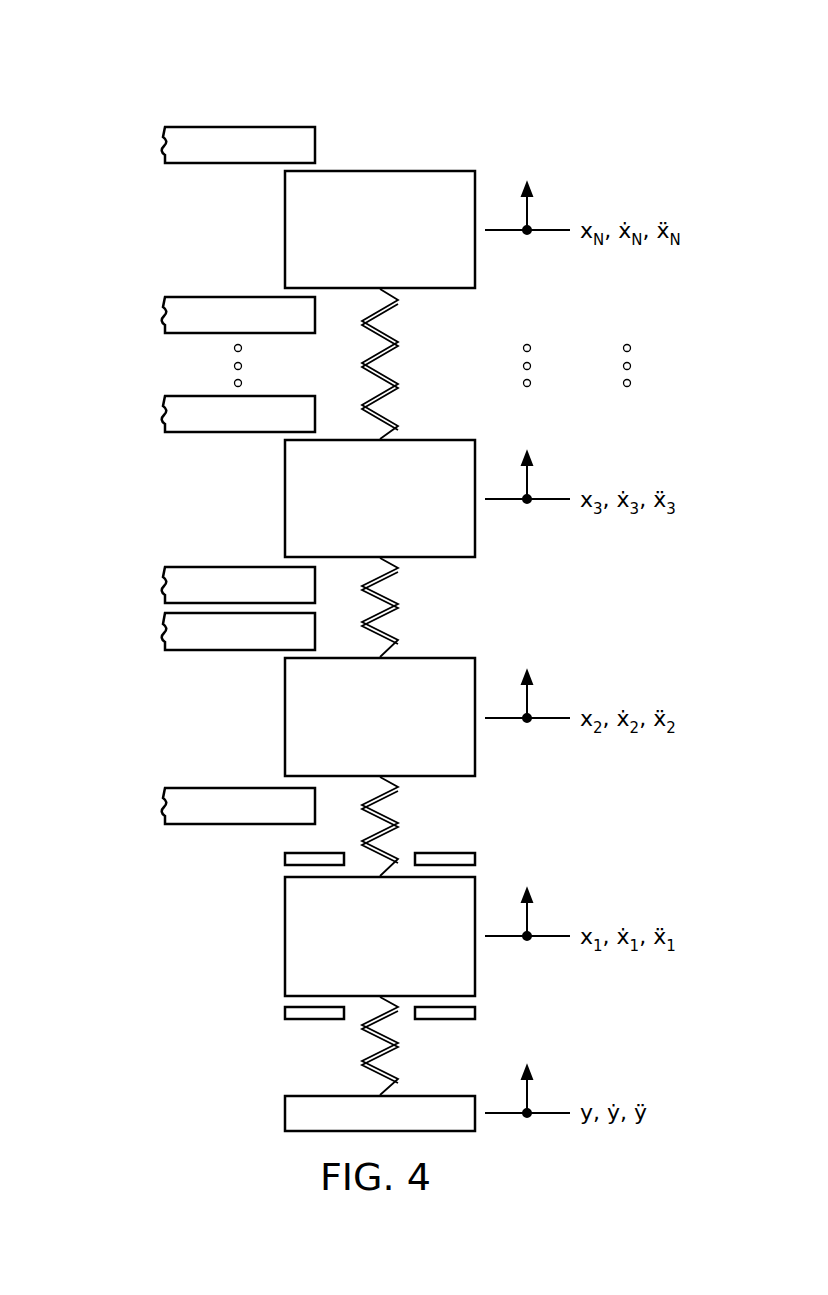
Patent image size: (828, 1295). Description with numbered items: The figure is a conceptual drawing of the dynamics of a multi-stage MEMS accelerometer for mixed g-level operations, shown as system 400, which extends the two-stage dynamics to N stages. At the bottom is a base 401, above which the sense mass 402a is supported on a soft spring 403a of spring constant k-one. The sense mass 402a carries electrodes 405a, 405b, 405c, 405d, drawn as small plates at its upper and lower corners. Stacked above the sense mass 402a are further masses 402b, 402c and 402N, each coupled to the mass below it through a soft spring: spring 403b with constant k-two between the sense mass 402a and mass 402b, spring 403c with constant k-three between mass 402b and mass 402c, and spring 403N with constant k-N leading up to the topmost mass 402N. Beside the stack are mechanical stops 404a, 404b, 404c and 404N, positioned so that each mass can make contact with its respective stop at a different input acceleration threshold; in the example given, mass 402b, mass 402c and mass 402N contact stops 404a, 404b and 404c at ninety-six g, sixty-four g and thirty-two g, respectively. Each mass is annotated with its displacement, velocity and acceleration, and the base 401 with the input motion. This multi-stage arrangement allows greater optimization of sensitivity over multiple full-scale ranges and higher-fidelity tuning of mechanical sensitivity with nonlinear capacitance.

The system 400 is at (500, 62).
The base / ground 401 is at (285, 1114).
The mass 402N is at (285, 228).
The mass 402c is at (285, 498).
The mass 402b is at (285, 715).
The sense mass 402a is at (285, 934).
The soft spring 403N is at (403, 332).
The soft spring 403c is at (403, 600).
The soft spring 403b is at (403, 819).
The soft spring 403a is at (403, 1060).
The mechanical stop 404N is at (165, 146).
The mechanical stop 404c is at (165, 316).
The mechanical stop 404b is at (165, 578).
The mechanical stop 404a is at (165, 803).
The electrode 405a is at (285, 859).
The electrode 405b is at (478, 858).
The electrode 405c is at (478, 1013).
The electrode 405d is at (285, 1013).